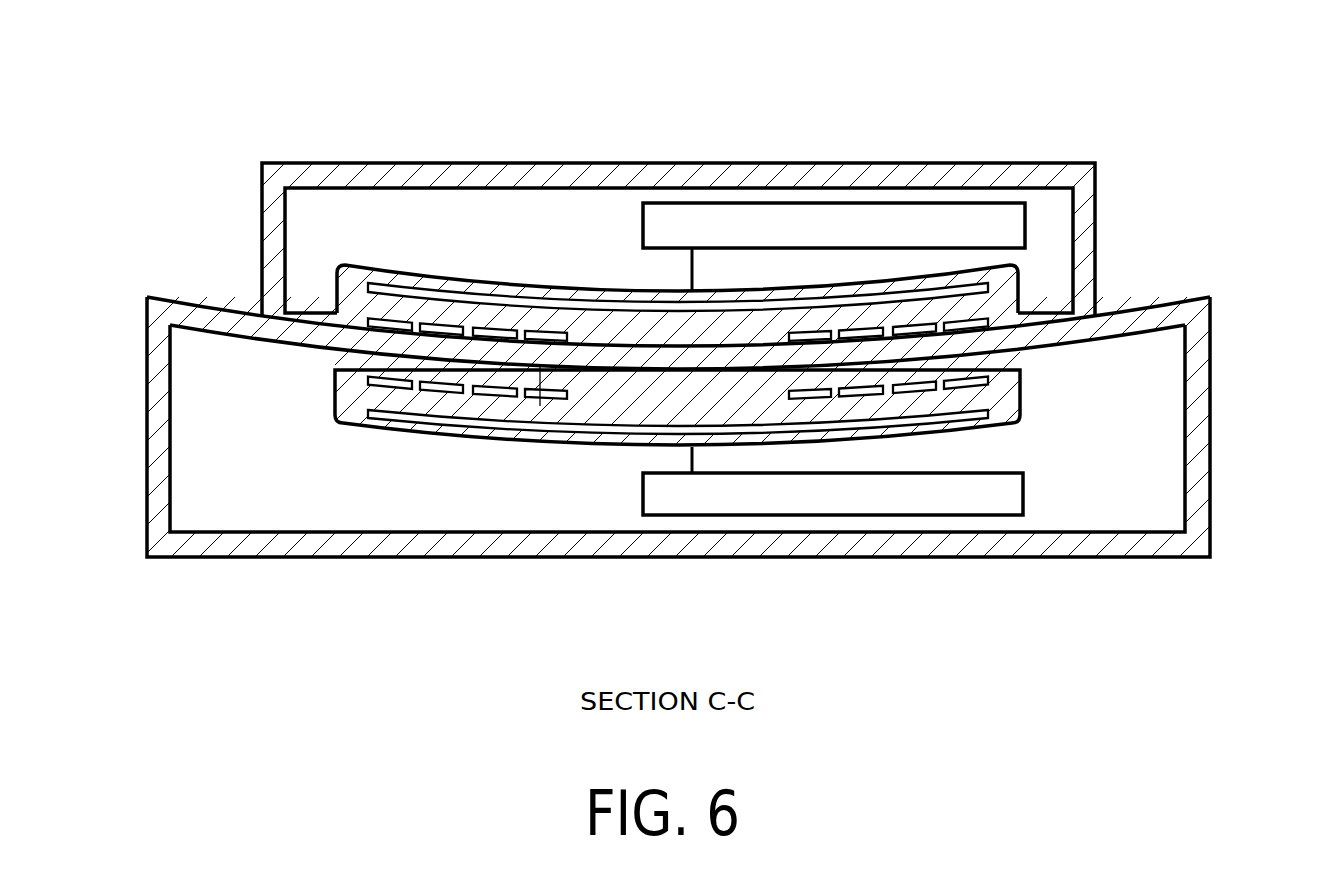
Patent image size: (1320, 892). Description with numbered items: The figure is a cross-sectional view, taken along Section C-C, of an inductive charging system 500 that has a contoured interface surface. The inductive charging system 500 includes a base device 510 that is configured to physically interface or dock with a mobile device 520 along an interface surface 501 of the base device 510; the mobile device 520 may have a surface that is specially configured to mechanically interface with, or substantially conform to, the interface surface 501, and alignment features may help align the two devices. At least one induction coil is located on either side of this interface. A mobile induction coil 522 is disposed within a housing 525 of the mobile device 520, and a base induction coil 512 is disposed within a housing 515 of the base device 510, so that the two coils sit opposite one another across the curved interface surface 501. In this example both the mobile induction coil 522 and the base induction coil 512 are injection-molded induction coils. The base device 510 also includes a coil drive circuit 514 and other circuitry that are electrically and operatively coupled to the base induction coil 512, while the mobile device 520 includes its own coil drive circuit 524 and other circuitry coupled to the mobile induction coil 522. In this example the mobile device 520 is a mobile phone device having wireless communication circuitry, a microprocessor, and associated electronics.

The inductive charging system 500 is at (262, 78).
The interface surface 501 is at (232, 310).
The base device 510 is at (262, 506).
The base induction coil 512 is at (1020, 418).
The coil drive circuit 514 is at (847, 503).
The housing 515 is at (412, 556).
The mobile device 520 is at (364, 233).
The mobile induction coil 522 is at (1018, 282).
The coil drive circuit 524 is at (829, 236).
The housing 525 is at (498, 165).